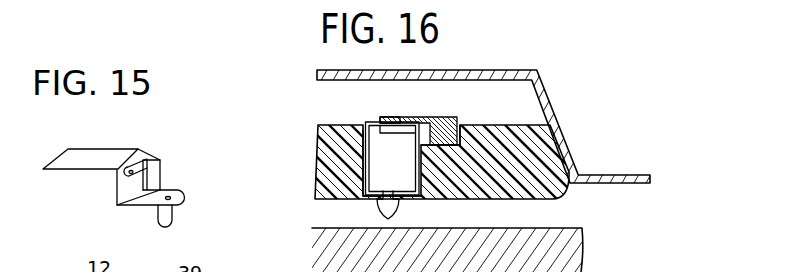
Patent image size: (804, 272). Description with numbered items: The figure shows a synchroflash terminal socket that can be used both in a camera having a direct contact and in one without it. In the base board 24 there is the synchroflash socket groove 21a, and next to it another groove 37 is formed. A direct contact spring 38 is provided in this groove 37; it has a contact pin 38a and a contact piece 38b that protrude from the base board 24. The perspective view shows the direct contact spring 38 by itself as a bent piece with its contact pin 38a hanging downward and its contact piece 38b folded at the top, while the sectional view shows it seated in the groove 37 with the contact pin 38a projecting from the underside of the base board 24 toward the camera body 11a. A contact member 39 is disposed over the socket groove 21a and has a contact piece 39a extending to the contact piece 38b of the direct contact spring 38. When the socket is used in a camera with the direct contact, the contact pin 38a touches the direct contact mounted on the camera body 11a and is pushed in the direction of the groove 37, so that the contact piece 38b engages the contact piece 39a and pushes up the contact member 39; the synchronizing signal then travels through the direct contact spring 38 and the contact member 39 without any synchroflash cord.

In FIG. 16, the camera body 11a is at (582, 228).
In FIG. 16, the synchroflash socket groove 21a is at (446, 145).
In FIG. 16, the base board 24 is at (337, 202).
In FIG. 16, the groove 37 is at (363, 178).
In FIG. 15, the direct contact spring 38 is at (169, 153).
In FIG. 16, the direct contact spring 38 is at (365, 143).
In FIG. 15, the contact pin 38a is at (174, 219).
In FIG. 16, the contact pin 38a is at (389, 214).
In FIG. 15, the contact piece 38b is at (147, 158).
In FIG. 16, the contact piece 38b is at (392, 136).
In FIG. 16, the contact member 39 is at (418, 121).
In FIG. 16, the contact piece 39a is at (392, 124).